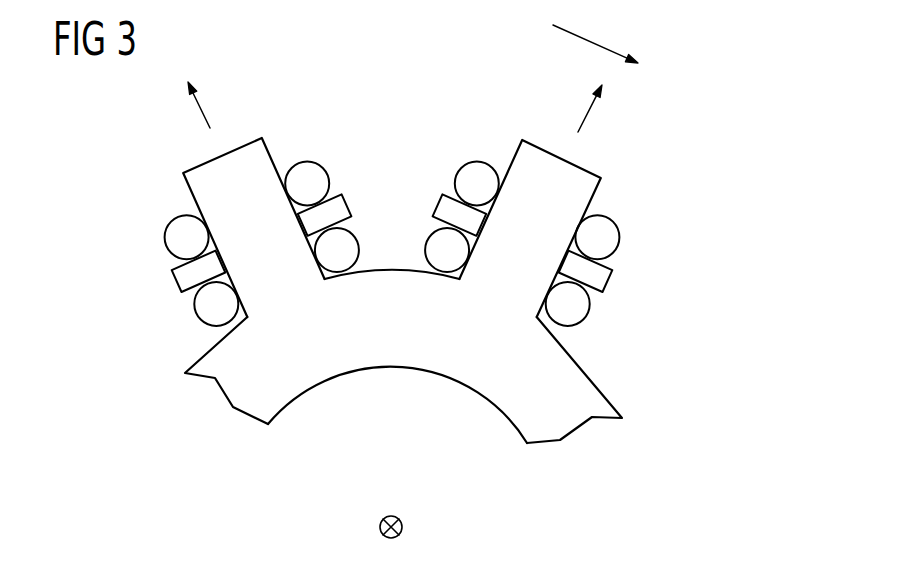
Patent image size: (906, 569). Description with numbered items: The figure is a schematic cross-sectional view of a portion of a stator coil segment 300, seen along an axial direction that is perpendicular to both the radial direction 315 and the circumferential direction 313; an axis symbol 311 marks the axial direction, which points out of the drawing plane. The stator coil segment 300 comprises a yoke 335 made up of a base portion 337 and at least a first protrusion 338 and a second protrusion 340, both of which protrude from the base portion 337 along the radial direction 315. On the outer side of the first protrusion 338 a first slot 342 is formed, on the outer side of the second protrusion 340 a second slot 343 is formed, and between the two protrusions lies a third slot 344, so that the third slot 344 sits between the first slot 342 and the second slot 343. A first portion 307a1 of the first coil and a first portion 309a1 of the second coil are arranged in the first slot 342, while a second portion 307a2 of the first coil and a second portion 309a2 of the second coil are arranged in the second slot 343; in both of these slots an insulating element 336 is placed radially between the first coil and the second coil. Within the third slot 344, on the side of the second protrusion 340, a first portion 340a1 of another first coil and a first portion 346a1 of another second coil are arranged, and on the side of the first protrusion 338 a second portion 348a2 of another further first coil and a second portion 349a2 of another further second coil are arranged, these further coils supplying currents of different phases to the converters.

The stator coil segment 300 is at (704, 65).
The axis of rotation 311 is at (380, 525).
The circumferential direction 313 is at (569, 36).
The radial direction 315 is at (204, 111).
The yoke 335 is at (403, 356).
The insulating element 336 is at (447, 208).
The base portion 337 is at (448, 361).
The first protrusion 338 is at (278, 254).
The second protrusion 340 is at (557, 240).
The first slot 342 is at (130, 185).
The second slot 343 is at (680, 215).
The third slot 344 is at (399, 96).
The first portion of another second coil 346a1 is at (476, 168).
The second portion of another further first coil 348a2 is at (308, 168).
The second portion of another further second coil 349a2 is at (342, 263).
The first portion of another first coil 340a1 is at (448, 263).
The first portion of the first coil 307a1 is at (167, 238).
The second portion of the first coil 307a2 is at (613, 243).
The first portion of the second coil 309a1 is at (203, 313).
The second portion of the second coil 309a2 is at (585, 320).